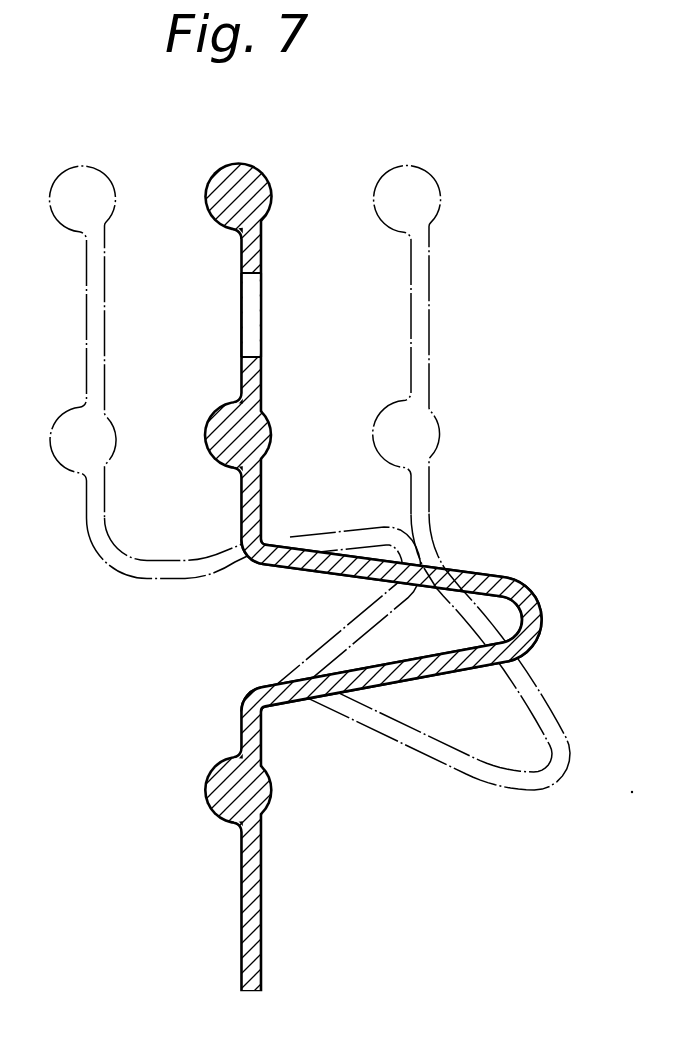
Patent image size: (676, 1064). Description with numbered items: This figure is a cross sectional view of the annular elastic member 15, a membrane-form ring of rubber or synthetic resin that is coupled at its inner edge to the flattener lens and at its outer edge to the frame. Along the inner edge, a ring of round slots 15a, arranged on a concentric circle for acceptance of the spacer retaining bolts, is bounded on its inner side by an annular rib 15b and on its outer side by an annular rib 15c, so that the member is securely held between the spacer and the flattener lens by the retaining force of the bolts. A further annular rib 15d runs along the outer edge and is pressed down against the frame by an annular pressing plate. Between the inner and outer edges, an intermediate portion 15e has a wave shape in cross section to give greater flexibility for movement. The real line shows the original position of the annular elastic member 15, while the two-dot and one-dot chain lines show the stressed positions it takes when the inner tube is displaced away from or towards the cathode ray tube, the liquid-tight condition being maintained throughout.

The annular elastic member 15 is at (164, 830).
The round slots 15a is at (246, 273).
The annular rib 15b is at (268, 187).
The annular rib 15c is at (265, 432).
The annular rib 15d is at (271, 791).
The intermediate portion 15e is at (484, 577).